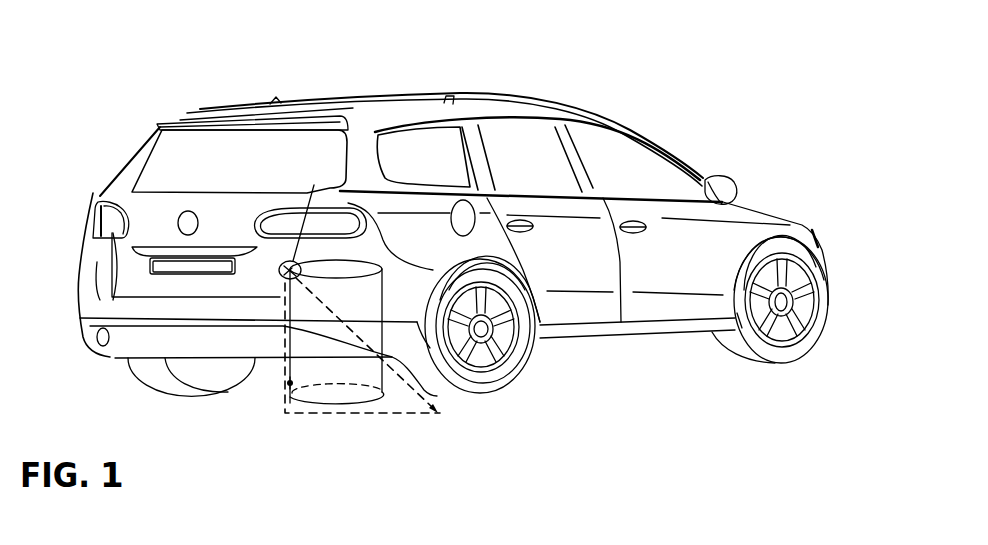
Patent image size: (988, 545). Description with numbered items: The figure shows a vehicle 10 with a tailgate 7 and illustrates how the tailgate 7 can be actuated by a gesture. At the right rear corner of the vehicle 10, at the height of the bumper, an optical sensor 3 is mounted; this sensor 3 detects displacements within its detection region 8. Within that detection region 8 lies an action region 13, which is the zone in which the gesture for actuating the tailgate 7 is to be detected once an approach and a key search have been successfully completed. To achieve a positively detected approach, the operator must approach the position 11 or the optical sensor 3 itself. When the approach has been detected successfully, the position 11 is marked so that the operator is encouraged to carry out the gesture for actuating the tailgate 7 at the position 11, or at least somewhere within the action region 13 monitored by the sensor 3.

The vehicle 10 is at (436, 244).
The tailgate 7 is at (142, 215).
The optical sensor 3 is at (278, 272).
The action region 13 is at (290, 383).
The position 11 is at (331, 372).
The detection region 8 is at (407, 413).